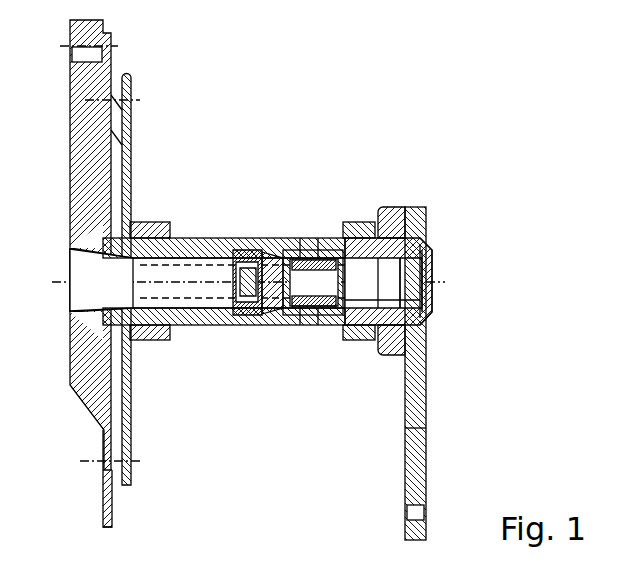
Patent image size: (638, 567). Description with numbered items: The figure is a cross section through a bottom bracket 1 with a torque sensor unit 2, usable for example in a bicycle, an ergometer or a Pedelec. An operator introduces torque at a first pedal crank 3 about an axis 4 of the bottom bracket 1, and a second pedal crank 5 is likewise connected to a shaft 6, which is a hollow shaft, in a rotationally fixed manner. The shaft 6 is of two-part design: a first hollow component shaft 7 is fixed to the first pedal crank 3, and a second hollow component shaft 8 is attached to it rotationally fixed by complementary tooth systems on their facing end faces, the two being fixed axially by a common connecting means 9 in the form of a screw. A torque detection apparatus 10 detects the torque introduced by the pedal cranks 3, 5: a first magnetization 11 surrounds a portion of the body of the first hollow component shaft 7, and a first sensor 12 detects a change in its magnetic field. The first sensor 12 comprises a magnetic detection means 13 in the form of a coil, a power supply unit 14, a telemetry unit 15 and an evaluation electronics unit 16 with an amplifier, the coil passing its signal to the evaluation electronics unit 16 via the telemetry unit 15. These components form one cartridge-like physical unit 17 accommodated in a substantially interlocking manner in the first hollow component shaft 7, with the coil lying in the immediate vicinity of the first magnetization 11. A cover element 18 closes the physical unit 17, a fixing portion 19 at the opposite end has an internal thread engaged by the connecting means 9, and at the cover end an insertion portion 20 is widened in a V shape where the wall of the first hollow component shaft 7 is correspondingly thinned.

The bottom bracket 1 is at (396, 92).
The torque sensor unit 2 is at (345, 210).
The first pedal crank 3 is at (427, 450).
The axis 4 is at (52, 282).
The second pedal crank 5 is at (70, 197).
The shaft 6 is at (233, 340).
The first hollow component shaft 7 is at (284, 325).
The second hollow component shaft 8 is at (197, 340).
The common connecting means 9 is at (262, 238).
The torque detection apparatus 10 is at (338, 325).
The first magnetization 11 is at (318, 325).
The first sensor 12 is at (303, 237).
The magnetic detection means 13 is at (319, 237).
The power supply unit 14 is at (415, 282).
The telemetry unit 15 is at (435, 305).
The evaluation electronics unit 16 is at (369, 222).
The physical unit 17 is at (438, 243).
The cover element 18 is at (435, 258).
The fixing portion 19 is at (280, 238).
The insertion portion 20 is at (366, 342).